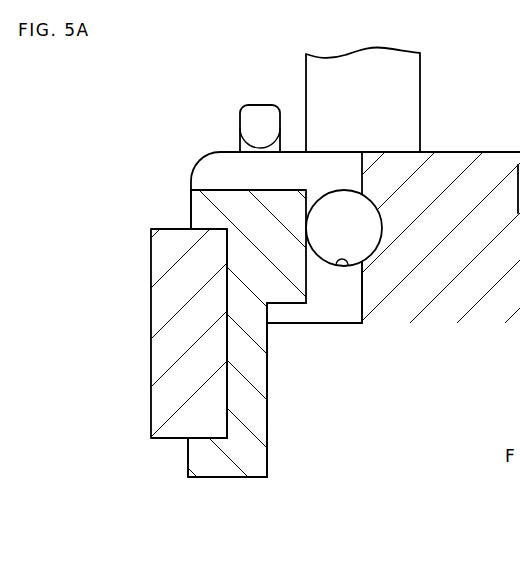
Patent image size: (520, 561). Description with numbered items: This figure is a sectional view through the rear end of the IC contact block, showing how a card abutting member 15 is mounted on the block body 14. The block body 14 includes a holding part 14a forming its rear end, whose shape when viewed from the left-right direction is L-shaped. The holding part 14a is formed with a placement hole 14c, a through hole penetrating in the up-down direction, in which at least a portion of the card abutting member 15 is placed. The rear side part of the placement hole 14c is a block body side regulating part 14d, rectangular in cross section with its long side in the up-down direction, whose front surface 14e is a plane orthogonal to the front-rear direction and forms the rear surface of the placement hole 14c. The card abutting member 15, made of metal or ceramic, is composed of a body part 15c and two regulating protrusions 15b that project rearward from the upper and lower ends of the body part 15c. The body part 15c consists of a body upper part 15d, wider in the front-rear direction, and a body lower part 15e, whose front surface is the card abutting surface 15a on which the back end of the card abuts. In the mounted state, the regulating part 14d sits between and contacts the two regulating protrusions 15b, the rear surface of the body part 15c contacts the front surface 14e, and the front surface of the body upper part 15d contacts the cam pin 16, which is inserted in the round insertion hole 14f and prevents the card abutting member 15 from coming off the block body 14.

The block body 14 is at (474, 151).
The holding part 14a is at (217, 151).
The placement hole 14c is at (362, 293).
The block body side regulating part 14d is at (172, 440).
The front surface of regulating part 14e is at (228, 354).
The insertion hole 14f is at (336, 265).
The card abutting member 15 is at (247, 478).
The card abutting surface 15a is at (267, 416).
The regulating protrusion 15b is at (191, 206).
The body part 15c is at (267, 453).
The body upper part 15d is at (286, 304).
The body lower part 15e is at (317, 458).
The cam pin 16 is at (343, 189).